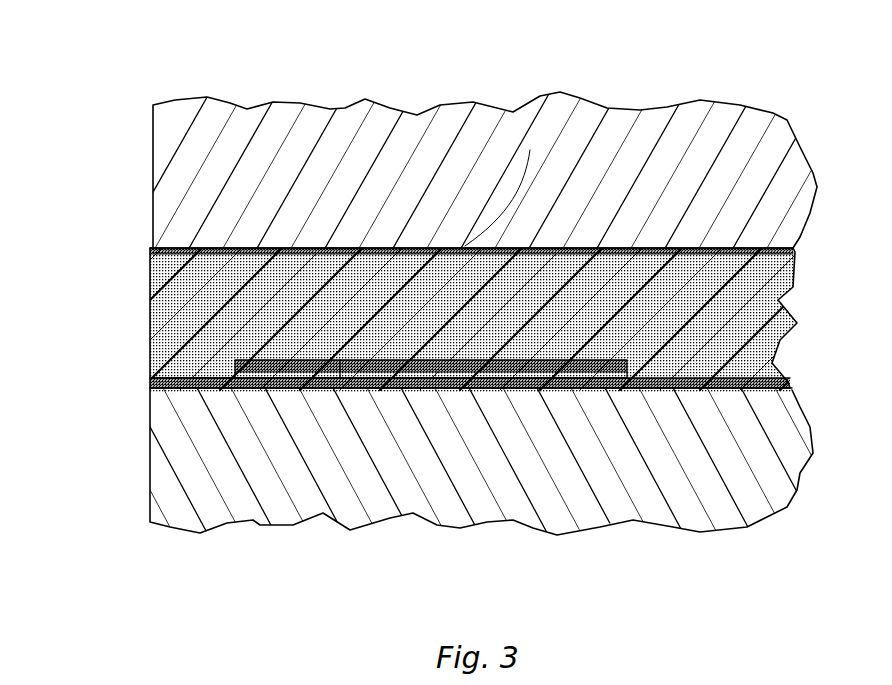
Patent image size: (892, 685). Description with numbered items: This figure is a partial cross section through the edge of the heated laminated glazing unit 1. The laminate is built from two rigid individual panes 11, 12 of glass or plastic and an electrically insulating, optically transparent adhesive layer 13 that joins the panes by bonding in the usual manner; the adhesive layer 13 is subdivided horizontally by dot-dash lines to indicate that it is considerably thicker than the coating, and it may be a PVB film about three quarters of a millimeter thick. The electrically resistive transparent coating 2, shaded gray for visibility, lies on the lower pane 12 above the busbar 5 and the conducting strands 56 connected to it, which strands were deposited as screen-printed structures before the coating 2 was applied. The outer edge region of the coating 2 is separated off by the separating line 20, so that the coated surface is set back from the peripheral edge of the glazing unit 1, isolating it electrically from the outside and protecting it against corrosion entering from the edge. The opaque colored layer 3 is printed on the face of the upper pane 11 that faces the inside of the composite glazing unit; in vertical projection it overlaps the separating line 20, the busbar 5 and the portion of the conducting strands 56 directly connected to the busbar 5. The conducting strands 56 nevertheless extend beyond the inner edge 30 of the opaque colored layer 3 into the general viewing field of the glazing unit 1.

The laminated glazing unit 1 is at (140, 81).
The electrically resistive transparent coating 2 is at (790, 384).
The opaque colored layer 3 is at (150, 252).
The busbar 5 is at (315, 392).
The rigid pane 11 is at (484, 183).
The rigid pane 12 is at (484, 473).
The adhesive layer 13 is at (446, 319).
The separating line 20 is at (195, 362).
The inner edge of the opaque colored layer 30 is at (465, 246).
The conducting strands 56 is at (527, 393).